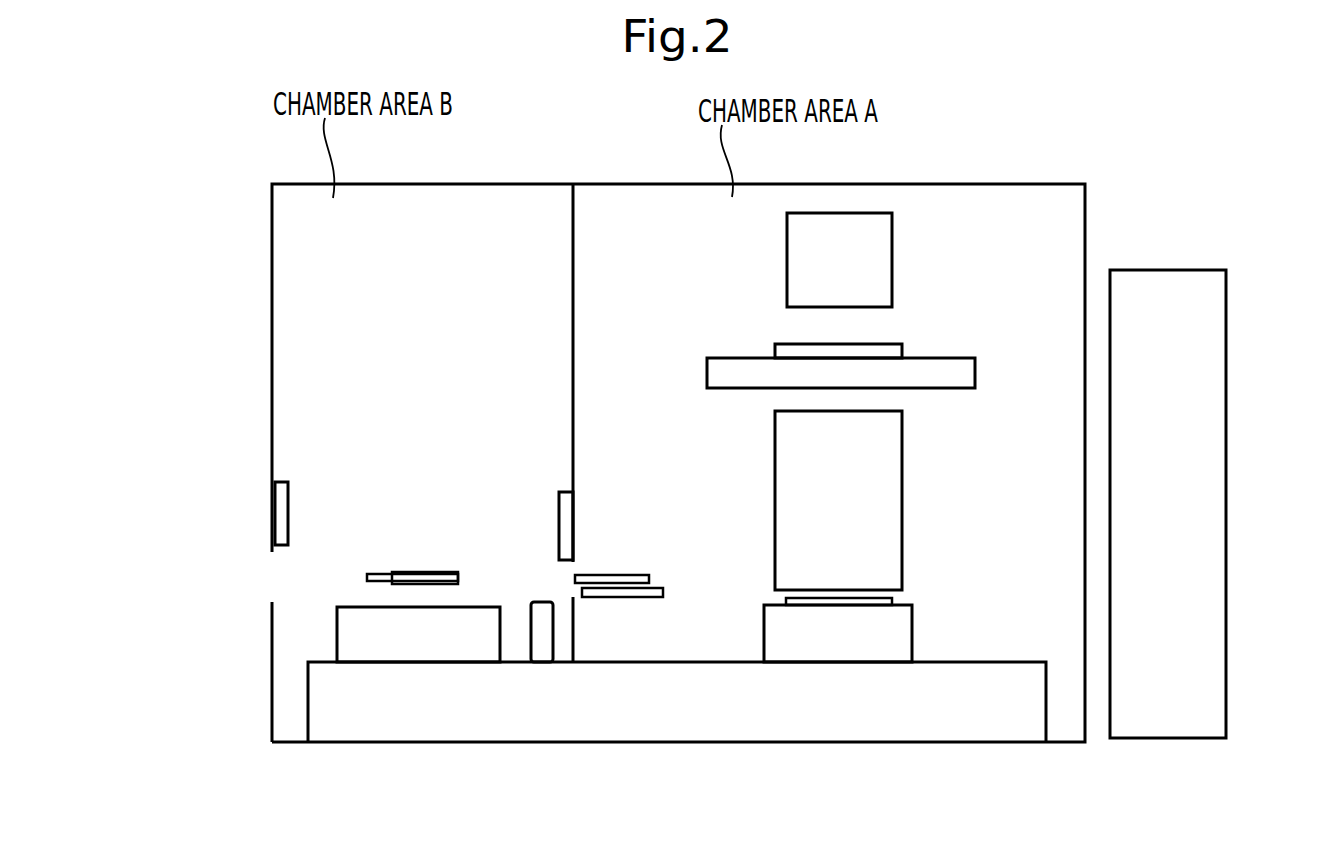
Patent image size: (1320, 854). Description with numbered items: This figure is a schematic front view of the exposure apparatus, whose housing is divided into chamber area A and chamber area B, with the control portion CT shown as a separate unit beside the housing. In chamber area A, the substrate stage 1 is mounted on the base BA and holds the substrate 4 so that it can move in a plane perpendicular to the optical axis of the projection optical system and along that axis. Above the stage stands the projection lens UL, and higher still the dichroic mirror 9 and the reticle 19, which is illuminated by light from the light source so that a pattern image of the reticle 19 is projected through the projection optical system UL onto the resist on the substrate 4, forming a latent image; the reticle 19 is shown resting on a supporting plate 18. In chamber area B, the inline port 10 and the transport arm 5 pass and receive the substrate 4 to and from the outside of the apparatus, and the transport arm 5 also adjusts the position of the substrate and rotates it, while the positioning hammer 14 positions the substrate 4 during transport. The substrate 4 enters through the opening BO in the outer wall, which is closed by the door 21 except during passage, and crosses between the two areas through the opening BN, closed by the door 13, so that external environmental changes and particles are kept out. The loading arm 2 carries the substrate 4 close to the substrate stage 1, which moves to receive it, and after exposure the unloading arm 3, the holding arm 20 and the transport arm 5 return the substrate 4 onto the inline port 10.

The substrate stage 1 is at (902, 628).
The loading arm 2 is at (637, 574).
The unloading arm 3 is at (650, 598).
The substrate 4 is at (870, 602).
The transport arm 5 is at (430, 572).
The dichroic mirror 9 is at (882, 275).
The inline port 10 is at (470, 625).
The door 13 is at (563, 520).
The positioning hammer 14 is at (375, 573).
The reticle stage 18 is at (962, 375).
The reticle 19 is at (890, 352).
The holding arm 20 is at (540, 605).
The door 21 is at (288, 482).
The projection lens UL is at (887, 538).
The opening BN is at (576, 570).
The opening BO is at (270, 573).
The base BA is at (642, 735).
The control portion CT is at (1228, 538).